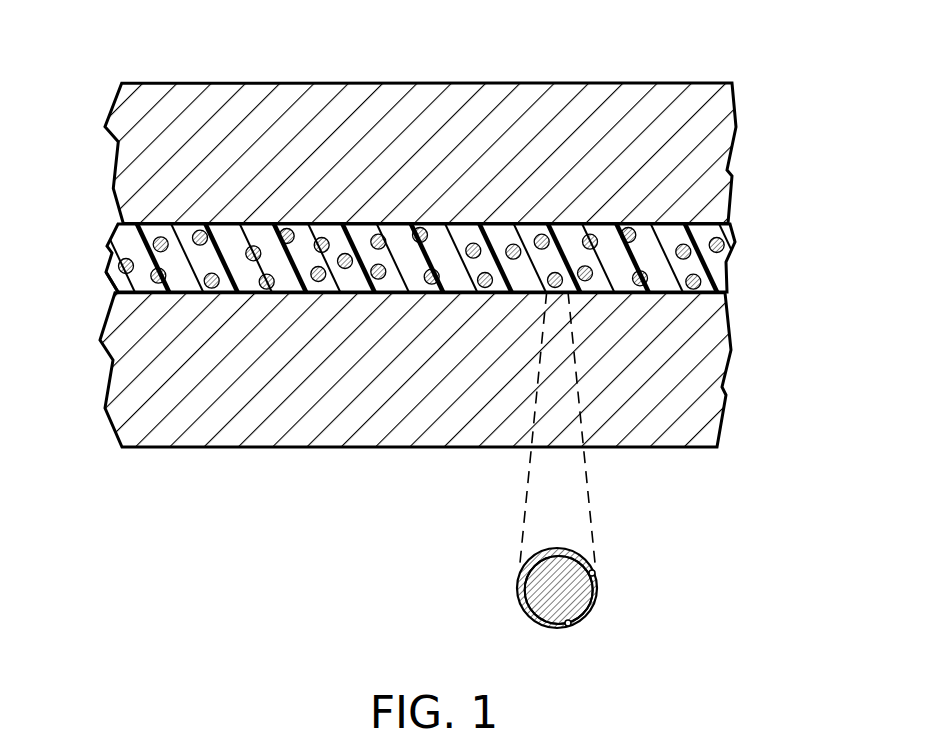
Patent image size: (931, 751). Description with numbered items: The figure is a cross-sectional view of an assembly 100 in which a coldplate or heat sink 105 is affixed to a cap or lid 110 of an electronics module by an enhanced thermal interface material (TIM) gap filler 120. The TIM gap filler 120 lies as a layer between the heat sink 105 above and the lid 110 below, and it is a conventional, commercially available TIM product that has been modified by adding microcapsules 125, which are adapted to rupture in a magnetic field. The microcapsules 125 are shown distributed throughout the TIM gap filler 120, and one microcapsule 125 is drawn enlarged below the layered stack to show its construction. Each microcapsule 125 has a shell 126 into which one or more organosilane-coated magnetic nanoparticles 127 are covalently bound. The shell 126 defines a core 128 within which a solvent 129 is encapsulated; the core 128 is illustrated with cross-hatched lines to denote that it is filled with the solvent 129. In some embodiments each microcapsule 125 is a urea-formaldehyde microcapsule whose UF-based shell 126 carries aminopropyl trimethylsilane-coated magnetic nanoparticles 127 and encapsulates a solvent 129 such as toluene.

The assembly 100 is at (108, 62).
The coldplate or heat sink 105 is at (732, 155).
The cap or lid 110 is at (730, 352).
The thermal interface material gap filler 120 is at (727, 290).
The microcapsule 125 is at (118, 258).
The shell 126 is at (726, 250).
The organosilane-coated magnetic nanoparticles 127 is at (568, 623).
The core 128 is at (730, 227).
The solvent 129 is at (110, 285).